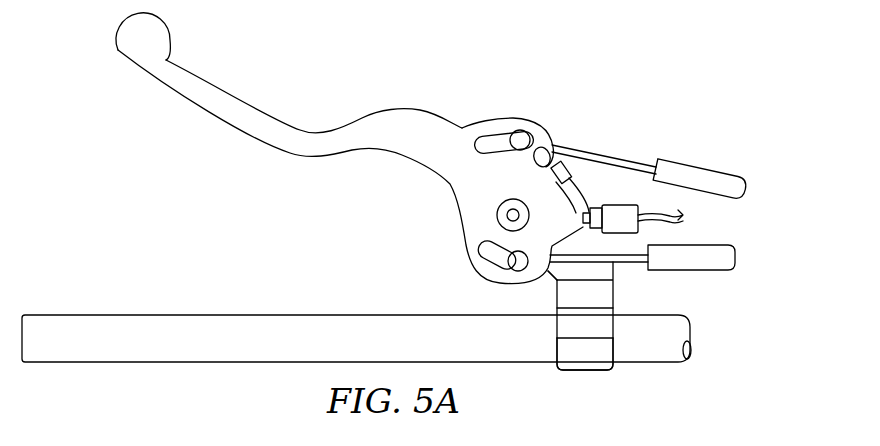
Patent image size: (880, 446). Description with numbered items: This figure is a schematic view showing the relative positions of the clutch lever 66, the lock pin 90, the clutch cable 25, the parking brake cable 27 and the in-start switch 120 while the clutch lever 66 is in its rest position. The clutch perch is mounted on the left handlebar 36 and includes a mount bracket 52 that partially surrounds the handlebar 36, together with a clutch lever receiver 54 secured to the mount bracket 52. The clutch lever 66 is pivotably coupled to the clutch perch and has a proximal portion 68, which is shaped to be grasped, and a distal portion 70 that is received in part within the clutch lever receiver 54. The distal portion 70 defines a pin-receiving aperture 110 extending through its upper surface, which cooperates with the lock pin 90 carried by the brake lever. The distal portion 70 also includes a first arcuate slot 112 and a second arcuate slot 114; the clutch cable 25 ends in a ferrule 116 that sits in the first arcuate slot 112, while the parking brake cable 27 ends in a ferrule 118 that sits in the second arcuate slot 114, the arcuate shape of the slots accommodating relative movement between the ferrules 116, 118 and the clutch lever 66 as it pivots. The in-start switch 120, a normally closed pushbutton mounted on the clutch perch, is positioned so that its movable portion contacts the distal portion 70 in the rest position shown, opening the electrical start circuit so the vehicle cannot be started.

The clutch cable 25 is at (720, 168).
The parking brake cable 27 is at (715, 245).
The left handlebar 36 is at (77, 364).
The mount bracket 52 is at (587, 372).
The clutch lever receiver 54 is at (616, 293).
The clutch lever 66 is at (207, 82).
The proximal portion 68 is at (255, 108).
The distal portion 70 is at (458, 203).
The lock pin 90 is at (573, 150).
The pin-receiving aperture 110 is at (533, 170).
The first arcuate slot 112 is at (493, 132).
The second arcuate slot 114 is at (473, 260).
The ferrule 116 is at (527, 131).
The ferrule 118 is at (505, 275).
The in-start switch 120 is at (613, 202).